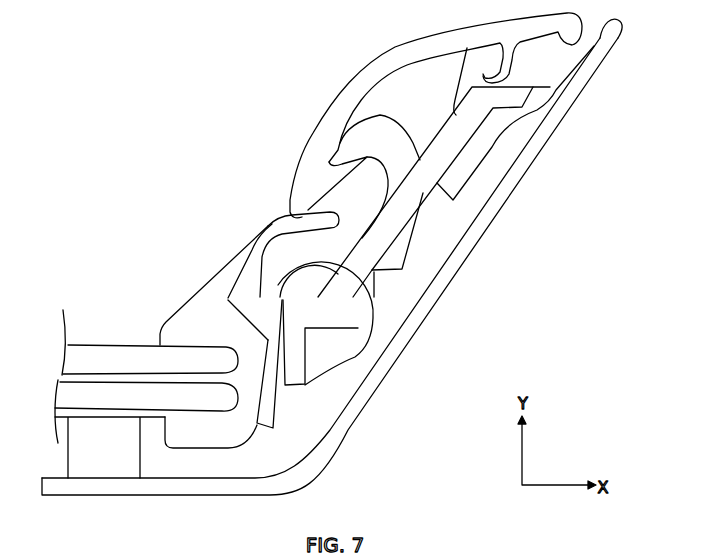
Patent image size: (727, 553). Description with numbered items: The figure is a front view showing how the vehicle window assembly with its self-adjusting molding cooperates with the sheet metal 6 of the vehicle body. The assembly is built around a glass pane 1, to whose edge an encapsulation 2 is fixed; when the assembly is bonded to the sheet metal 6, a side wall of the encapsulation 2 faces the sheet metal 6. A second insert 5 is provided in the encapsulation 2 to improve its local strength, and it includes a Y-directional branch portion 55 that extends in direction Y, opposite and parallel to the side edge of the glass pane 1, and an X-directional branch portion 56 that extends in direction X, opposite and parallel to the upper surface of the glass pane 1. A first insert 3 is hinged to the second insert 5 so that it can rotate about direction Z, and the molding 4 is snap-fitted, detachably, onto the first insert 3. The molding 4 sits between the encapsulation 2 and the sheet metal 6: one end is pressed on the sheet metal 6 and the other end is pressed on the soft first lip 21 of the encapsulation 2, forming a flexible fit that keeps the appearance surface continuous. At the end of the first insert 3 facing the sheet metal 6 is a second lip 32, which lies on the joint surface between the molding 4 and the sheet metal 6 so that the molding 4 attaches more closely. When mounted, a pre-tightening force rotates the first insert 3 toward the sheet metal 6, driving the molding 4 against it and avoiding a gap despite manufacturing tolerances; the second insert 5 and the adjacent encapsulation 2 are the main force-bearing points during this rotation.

The glass pane 1 is at (117, 360).
The encapsulation 2 is at (203, 320).
The first lip 21 is at (285, 228).
The first insert 3 is at (410, 193).
The second lip 32 is at (540, 103).
The molding 4 is at (348, 100).
The second insert 5 is at (350, 317).
The Y-directional branch portion 55 is at (266, 377).
The X-directional branch portion 56 is at (268, 340).
The sheet metal 6 is at (268, 489).